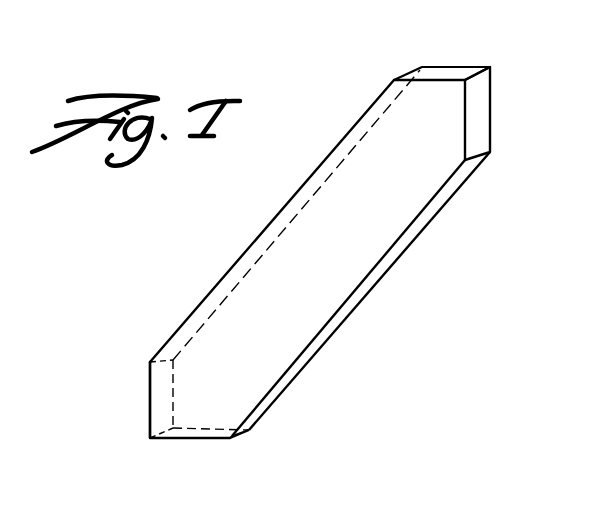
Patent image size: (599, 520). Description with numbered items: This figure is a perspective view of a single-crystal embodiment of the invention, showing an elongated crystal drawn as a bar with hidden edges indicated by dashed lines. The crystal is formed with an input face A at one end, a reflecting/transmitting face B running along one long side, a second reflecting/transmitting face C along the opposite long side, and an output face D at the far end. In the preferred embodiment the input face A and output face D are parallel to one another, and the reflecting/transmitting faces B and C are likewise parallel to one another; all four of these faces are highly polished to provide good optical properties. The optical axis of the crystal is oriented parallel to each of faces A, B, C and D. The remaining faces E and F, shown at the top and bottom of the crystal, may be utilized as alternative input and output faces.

The input face A is at (160, 408).
The reflecting/transmitting face B is at (362, 290).
The reflecting/transmitting face C is at (275, 233).
The output face D is at (487, 100).
The alternative input/output face E is at (440, 72).
The alternative input/output face F is at (188, 433).